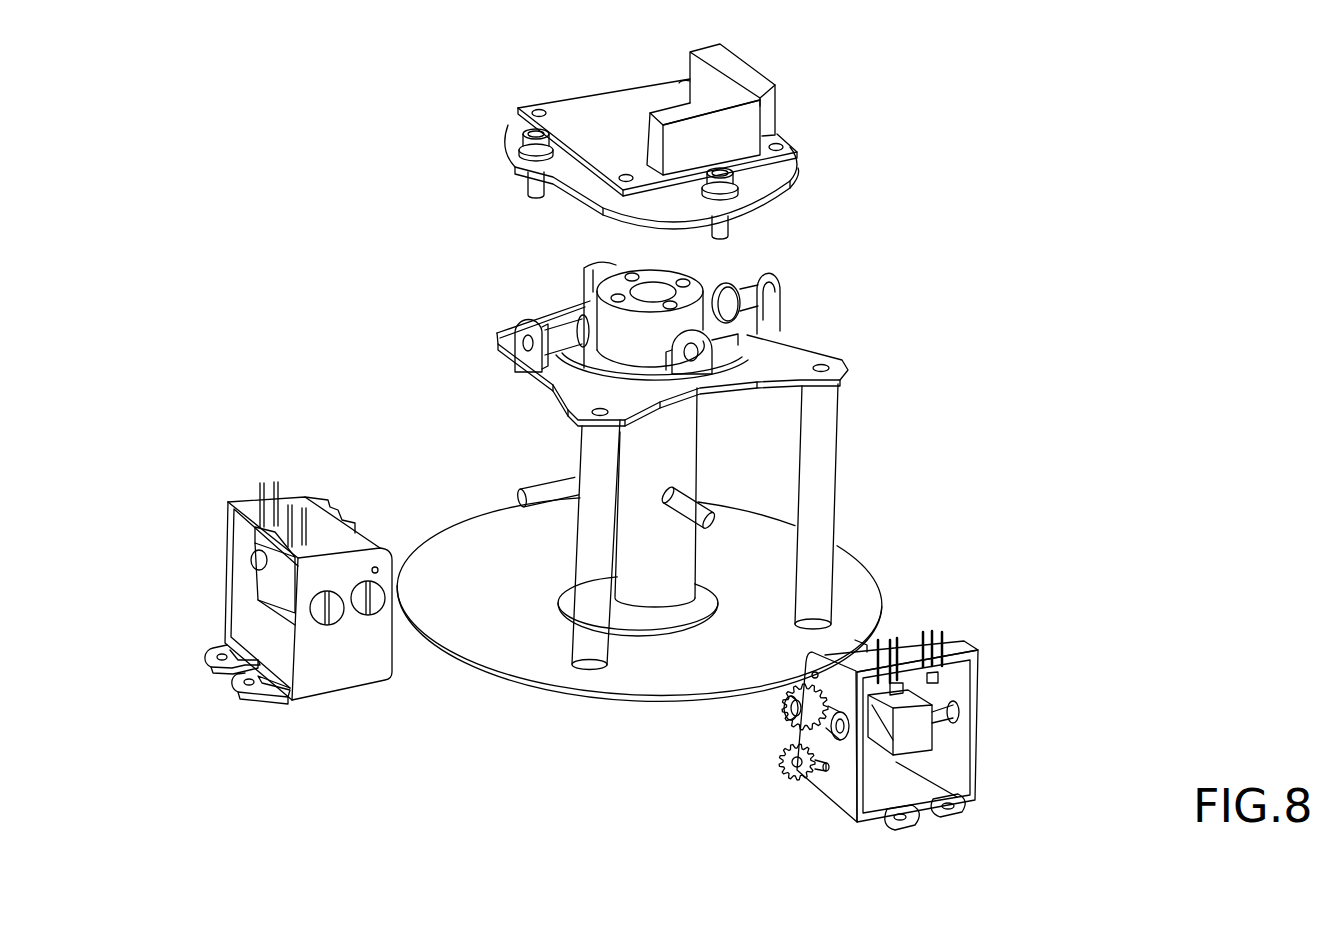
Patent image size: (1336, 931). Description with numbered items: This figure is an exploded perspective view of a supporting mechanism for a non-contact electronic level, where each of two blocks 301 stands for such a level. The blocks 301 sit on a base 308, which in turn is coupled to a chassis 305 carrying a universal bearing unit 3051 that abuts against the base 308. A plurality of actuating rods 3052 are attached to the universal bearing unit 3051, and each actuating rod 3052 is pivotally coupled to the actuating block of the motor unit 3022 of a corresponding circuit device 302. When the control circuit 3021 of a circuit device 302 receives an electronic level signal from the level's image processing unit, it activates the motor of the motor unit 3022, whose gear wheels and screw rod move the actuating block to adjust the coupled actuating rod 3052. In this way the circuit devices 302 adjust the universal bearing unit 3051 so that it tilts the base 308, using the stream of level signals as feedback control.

The block 301 is at (742, 70).
The base 308 is at (508, 152).
The chassis 305 is at (882, 392).
The universal bearing unit 3051 is at (722, 268).
The actuating rod 3052 is at (547, 490).
The circuit device 302 is at (191, 539).
The control circuit 3021 is at (957, 645).
The motor unit 3022 is at (962, 806).